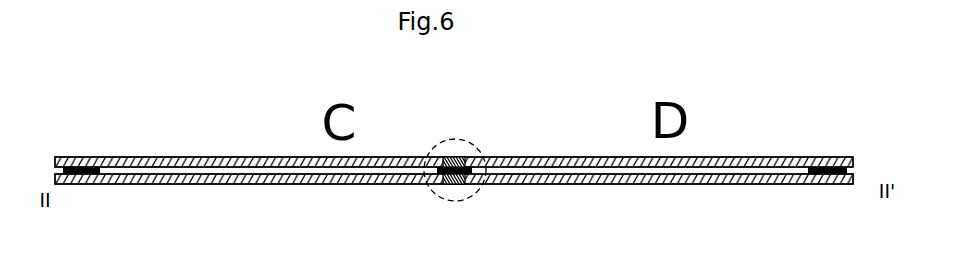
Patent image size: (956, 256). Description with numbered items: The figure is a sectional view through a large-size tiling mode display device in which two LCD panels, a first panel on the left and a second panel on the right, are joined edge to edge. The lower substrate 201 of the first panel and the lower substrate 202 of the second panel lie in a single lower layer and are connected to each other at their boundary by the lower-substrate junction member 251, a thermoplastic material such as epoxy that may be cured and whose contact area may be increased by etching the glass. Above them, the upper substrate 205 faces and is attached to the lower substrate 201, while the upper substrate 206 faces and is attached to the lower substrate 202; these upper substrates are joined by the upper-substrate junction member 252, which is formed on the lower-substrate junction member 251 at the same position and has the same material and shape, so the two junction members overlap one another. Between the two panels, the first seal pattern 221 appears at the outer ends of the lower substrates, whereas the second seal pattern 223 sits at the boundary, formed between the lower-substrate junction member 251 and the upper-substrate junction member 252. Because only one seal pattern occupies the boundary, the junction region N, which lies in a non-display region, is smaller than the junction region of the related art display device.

The lower substrate 201 is at (233, 184).
The lower substrate 202 is at (842, 184).
The upper substrate 205 is at (258, 157).
The upper substrate 206 is at (838, 157).
The first seal pattern 221 is at (75, 184).
The second seal pattern 223 is at (437, 171).
The lower-substrate junction member 251 is at (456, 184).
The upper-substrate junction member 252 is at (455, 157).
The junction region N is at (474, 143).